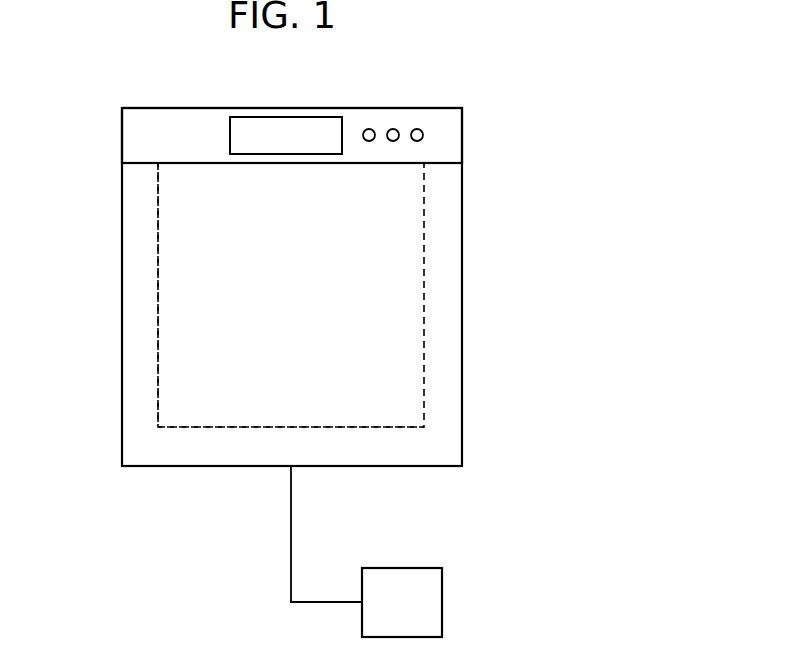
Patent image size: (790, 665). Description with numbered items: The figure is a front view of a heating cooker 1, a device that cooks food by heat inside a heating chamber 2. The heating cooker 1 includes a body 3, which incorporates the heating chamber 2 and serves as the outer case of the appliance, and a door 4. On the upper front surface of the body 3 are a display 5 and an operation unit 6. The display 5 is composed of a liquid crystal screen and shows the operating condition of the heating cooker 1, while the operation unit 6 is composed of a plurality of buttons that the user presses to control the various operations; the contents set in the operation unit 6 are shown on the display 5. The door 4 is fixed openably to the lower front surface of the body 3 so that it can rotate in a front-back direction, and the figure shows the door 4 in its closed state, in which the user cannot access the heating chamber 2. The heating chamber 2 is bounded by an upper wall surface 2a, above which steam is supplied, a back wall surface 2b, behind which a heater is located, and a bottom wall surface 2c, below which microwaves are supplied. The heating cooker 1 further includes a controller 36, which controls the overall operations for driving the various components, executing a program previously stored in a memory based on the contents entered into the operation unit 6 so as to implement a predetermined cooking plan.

The heating cooker 1 is at (545, 86).
The heating chamber 2 is at (388, 367).
The upper wall surface 2a is at (193, 164).
The back wall surface 2b is at (175, 335).
The bottom wall surface 2c is at (211, 426).
The body 3 is at (153, 147).
The door 4 is at (437, 263).
The display 5 is at (300, 130).
The operation unit 6 is at (393, 128).
The controller 36 is at (366, 551).